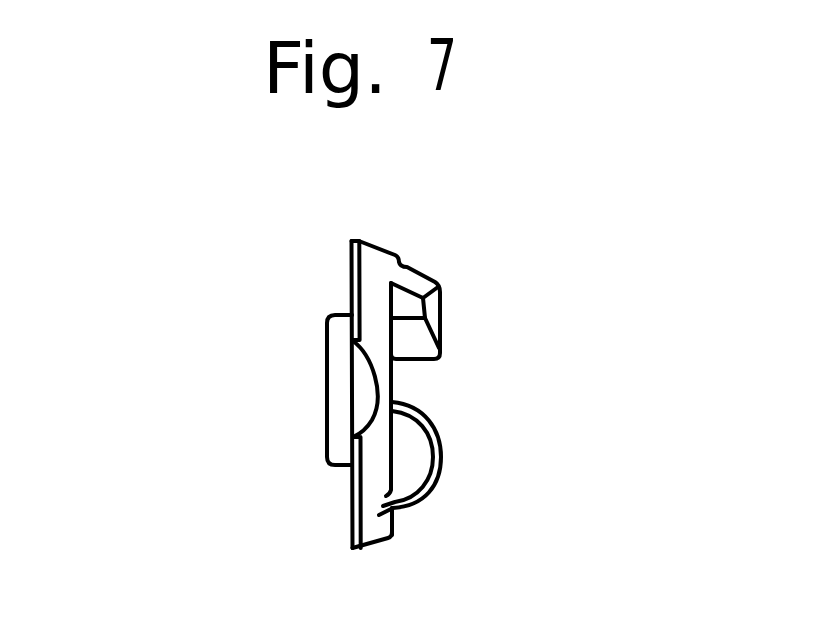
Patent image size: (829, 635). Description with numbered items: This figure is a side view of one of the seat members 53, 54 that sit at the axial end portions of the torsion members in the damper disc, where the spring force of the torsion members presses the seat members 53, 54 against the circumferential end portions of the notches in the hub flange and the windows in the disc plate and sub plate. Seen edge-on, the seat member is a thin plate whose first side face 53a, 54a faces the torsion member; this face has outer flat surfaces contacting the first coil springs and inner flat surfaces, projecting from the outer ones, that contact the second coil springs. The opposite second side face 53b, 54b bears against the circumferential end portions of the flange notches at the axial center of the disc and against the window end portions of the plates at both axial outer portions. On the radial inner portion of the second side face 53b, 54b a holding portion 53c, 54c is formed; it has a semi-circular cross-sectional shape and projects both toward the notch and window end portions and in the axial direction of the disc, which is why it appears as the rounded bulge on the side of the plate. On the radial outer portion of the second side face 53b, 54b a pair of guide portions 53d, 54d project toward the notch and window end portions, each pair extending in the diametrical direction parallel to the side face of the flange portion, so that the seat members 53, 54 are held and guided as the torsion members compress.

The seat member 53 is at (387, 371).
The seat member 54 is at (384, 244).
The first side face 53a is at (508, 548).
The first side face 54a is at (392, 527).
The second side face 53b is at (231, 390).
The second side face 54b is at (390, 386).
The holding portion 53c is at (544, 458).
The holding portion 54c is at (413, 465).
The guide portion 53d is at (554, 315).
The guide portion 54d is at (420, 342).